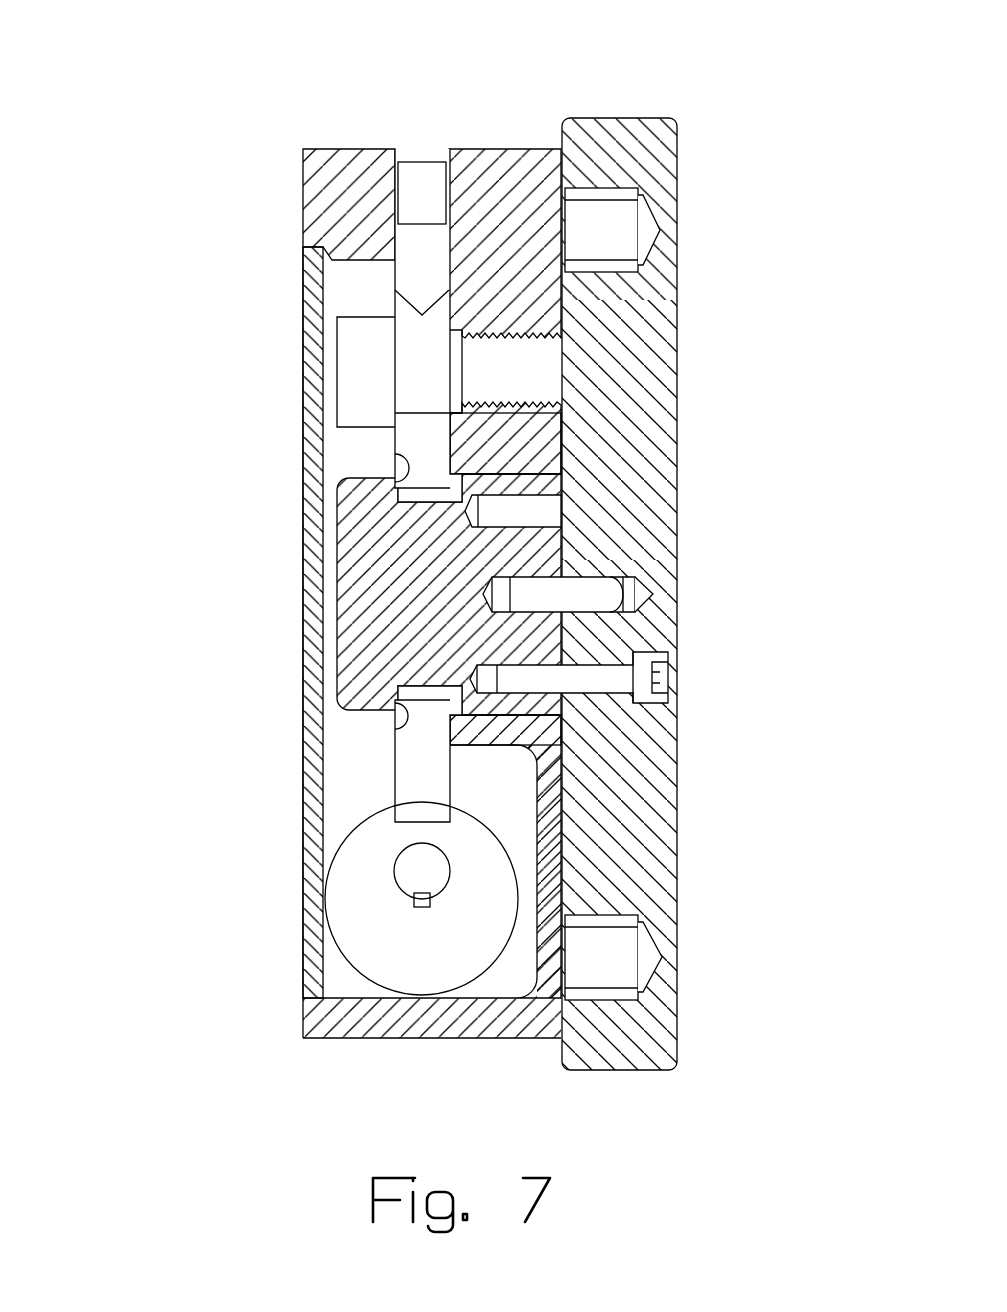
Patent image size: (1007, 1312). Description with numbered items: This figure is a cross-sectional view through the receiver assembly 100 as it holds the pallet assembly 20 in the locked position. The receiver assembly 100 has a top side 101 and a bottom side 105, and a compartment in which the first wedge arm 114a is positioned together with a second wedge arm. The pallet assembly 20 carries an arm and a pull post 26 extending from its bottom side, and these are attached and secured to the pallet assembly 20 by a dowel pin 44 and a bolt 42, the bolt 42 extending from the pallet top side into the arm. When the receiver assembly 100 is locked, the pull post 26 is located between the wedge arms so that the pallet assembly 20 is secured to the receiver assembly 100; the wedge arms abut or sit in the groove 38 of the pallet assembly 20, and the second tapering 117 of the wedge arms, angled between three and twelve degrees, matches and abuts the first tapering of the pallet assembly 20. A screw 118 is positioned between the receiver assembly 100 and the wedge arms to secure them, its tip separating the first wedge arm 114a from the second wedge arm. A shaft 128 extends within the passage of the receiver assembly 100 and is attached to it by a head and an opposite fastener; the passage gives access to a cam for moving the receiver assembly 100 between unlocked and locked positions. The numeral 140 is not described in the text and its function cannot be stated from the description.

The receiver assembly 100 is at (470, 575).
The pallet assembly 20 is at (712, 237).
The top side 101 is at (396, 598).
The bottom side 105 is at (372, 1020).
The first wedge arm 114a is at (452, 441).
The pull post 26 is at (344, 594).
The groove 38 is at (420, 588).
The bolt 42 is at (540, 511).
The dowel pin 44 is at (595, 593).
The locking pin 140 is at (358, 416).
The screw 118 is at (423, 207).
The second tapering 117 is at (403, 463).
The shaft 128 is at (422, 880).